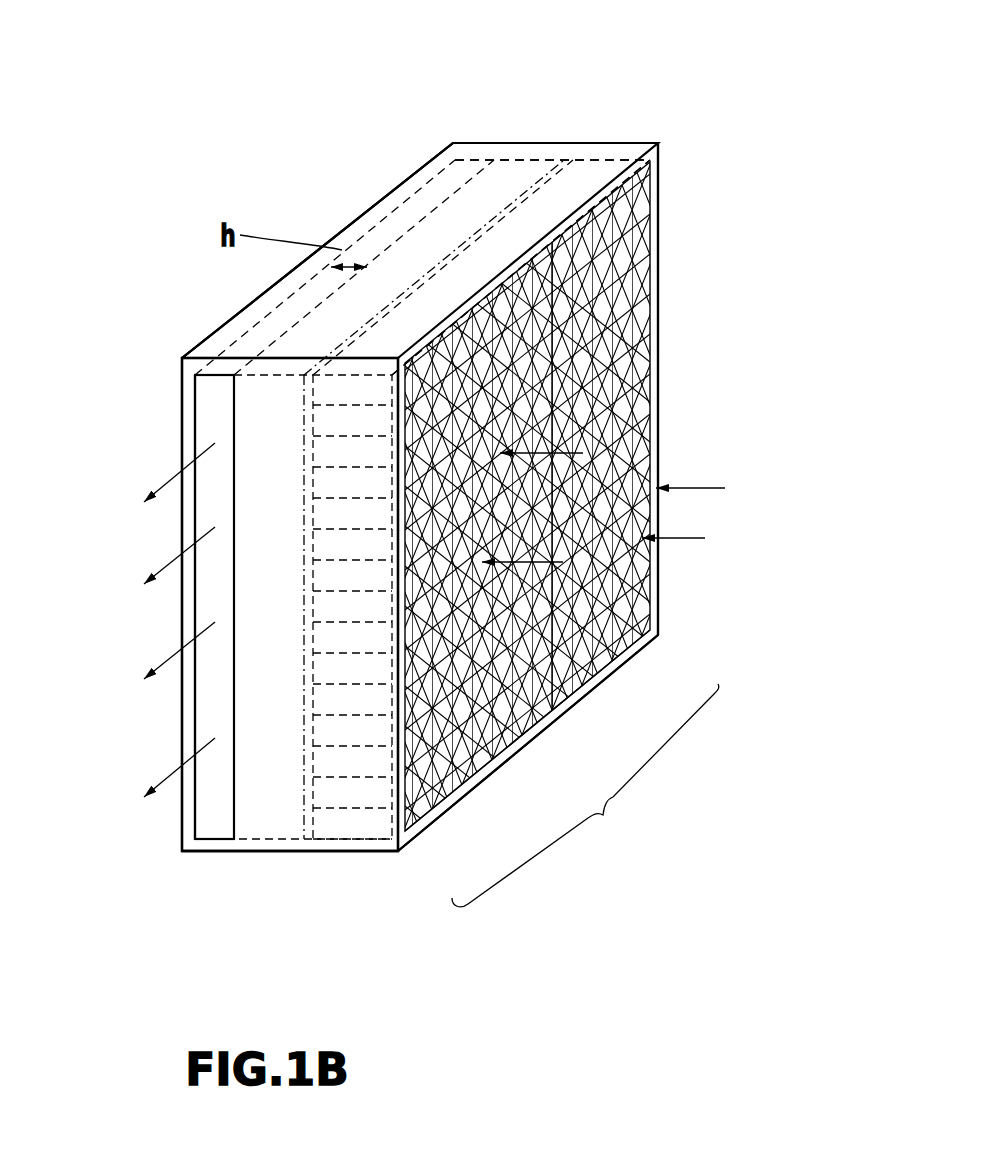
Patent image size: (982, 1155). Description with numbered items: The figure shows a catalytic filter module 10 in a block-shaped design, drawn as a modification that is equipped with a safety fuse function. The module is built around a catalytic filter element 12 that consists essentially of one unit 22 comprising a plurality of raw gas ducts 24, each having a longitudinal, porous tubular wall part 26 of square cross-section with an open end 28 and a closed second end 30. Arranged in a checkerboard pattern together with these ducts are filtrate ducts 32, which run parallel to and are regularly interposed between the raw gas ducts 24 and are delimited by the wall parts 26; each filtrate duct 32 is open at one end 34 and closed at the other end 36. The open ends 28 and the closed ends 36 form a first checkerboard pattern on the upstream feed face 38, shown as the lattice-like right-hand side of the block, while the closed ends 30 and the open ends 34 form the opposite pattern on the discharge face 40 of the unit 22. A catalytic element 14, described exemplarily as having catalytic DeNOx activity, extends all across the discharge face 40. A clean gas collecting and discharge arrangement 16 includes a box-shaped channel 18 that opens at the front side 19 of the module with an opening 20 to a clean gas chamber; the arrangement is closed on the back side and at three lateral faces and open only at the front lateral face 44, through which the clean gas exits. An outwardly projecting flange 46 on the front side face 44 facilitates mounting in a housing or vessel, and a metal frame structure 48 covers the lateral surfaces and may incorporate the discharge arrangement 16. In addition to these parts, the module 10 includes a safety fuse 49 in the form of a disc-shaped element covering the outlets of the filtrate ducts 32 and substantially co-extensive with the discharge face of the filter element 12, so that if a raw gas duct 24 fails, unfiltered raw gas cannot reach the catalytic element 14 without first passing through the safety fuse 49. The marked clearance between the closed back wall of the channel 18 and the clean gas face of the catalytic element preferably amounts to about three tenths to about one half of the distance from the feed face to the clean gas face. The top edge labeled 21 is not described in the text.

The catalytic filter module 10 is at (507, 491).
The catalytic filter element 12 is at (618, 120).
The catalytic element 14 is at (529, 146).
The clean gas collecting and discharge arrangement 16 is at (370, 219).
The box-shaped channel 18 is at (417, 208).
The front side 19 is at (272, 866).
The opening 20 is at (205, 688).
The top edge 21 is at (478, 140).
The unit 22 is at (585, 795).
The raw gas ducts 24 is at (477, 750).
The tubular wall part 26 is at (333, 822).
The open end 28 is at (407, 832).
The closed second end 30 is at (304, 822).
The filtrate ducts 32 is at (332, 735).
The open end 34 is at (313, 730).
The closed end 36 is at (550, 720).
The feed face 38 is at (692, 440).
The discharge face 40 is at (560, 173).
The front lateral face 44 is at (166, 415).
The flange 46 is at (190, 395).
The metal frame structure 48 is at (644, 140).
The safety fuse 49 is at (360, 330).